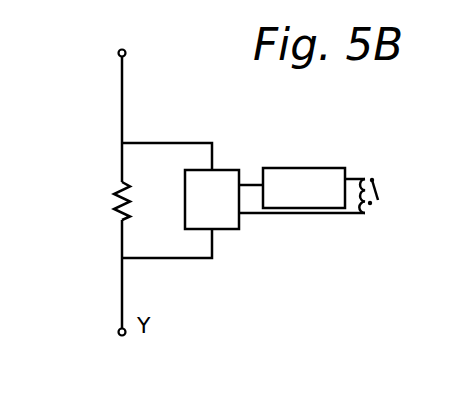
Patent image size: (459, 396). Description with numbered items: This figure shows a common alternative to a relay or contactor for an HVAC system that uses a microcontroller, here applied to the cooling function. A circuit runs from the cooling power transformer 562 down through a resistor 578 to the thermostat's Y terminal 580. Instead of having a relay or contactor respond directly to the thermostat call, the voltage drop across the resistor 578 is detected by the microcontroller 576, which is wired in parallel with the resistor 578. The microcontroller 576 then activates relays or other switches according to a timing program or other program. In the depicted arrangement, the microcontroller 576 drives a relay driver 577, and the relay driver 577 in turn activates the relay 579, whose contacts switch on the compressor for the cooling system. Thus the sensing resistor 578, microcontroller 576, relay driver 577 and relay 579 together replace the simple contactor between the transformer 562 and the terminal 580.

The cooling power transformer 562 is at (126, 51).
The microcontroller 576 is at (239, 170).
The relay driver 577 is at (304, 188).
The resistor 578 is at (106, 192).
The relay 579 is at (359, 228).
The terminal 580 is at (125, 334).